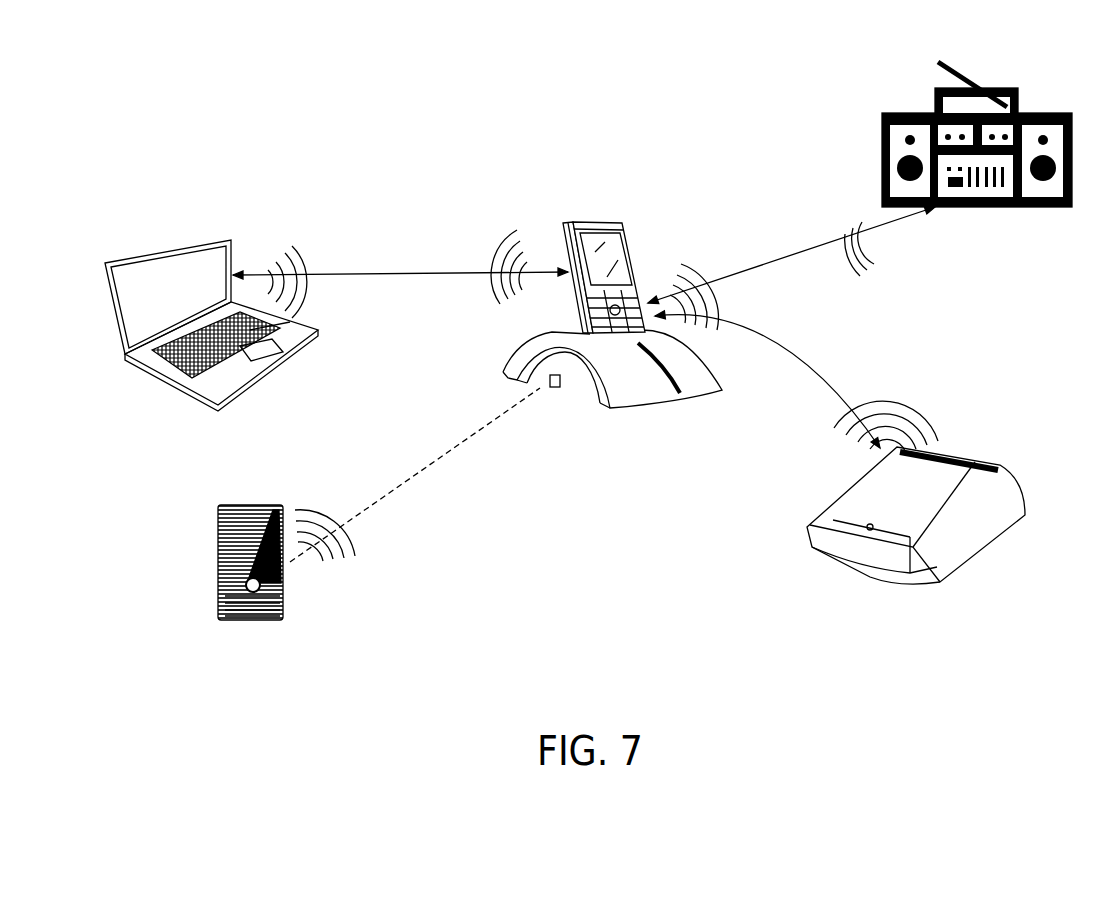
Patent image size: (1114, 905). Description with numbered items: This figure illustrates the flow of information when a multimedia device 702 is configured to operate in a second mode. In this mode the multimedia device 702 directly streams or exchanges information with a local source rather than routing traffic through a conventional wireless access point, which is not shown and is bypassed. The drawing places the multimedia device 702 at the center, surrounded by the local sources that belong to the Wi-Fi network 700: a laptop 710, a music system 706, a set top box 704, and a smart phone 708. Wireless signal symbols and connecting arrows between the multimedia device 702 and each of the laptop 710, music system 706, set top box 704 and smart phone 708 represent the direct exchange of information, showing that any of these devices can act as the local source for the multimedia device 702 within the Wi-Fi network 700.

The Wi-Fi network 700 is at (594, 98).
The multimedia device 702 is at (583, 219).
The set top box 704 is at (947, 458).
The music system 706 is at (975, 86).
The smart phone 708 is at (233, 503).
The laptop 710 is at (140, 250).